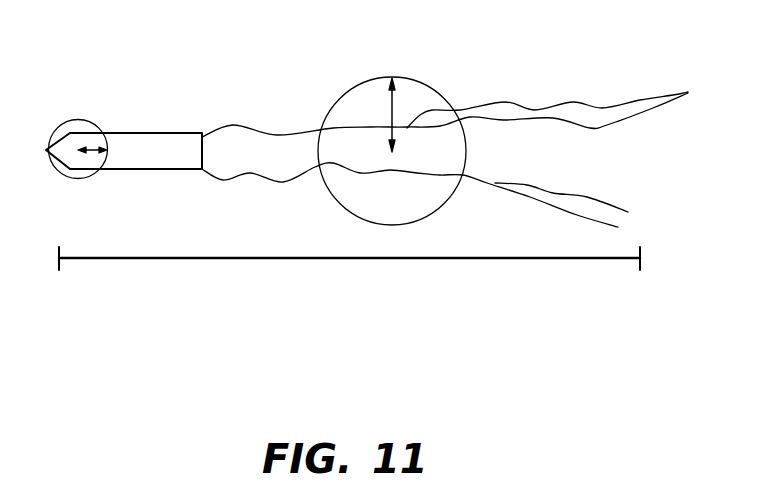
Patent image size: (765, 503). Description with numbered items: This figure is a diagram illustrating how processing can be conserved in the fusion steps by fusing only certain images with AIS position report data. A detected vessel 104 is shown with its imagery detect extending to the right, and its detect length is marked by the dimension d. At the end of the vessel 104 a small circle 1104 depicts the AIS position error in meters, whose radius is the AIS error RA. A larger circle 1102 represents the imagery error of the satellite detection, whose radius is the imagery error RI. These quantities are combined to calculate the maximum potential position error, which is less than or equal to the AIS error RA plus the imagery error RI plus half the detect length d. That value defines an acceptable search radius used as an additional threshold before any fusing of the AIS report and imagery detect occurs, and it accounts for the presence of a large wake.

The vessel 104 is at (180, 131).
The AIS position error circle 1104 is at (88, 122).
The imagery error circle 1102 is at (462, 67).
The AIS error radius RA is at (93, 147).
The imagery error radius RI is at (390, 110).
The imagery detect length d is at (427, 259).